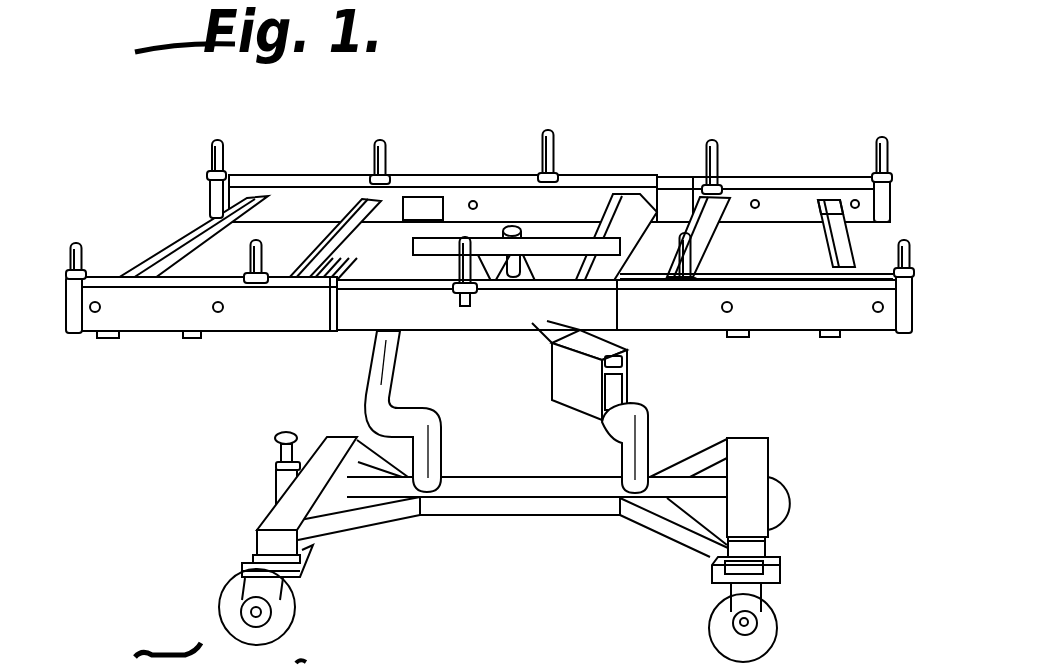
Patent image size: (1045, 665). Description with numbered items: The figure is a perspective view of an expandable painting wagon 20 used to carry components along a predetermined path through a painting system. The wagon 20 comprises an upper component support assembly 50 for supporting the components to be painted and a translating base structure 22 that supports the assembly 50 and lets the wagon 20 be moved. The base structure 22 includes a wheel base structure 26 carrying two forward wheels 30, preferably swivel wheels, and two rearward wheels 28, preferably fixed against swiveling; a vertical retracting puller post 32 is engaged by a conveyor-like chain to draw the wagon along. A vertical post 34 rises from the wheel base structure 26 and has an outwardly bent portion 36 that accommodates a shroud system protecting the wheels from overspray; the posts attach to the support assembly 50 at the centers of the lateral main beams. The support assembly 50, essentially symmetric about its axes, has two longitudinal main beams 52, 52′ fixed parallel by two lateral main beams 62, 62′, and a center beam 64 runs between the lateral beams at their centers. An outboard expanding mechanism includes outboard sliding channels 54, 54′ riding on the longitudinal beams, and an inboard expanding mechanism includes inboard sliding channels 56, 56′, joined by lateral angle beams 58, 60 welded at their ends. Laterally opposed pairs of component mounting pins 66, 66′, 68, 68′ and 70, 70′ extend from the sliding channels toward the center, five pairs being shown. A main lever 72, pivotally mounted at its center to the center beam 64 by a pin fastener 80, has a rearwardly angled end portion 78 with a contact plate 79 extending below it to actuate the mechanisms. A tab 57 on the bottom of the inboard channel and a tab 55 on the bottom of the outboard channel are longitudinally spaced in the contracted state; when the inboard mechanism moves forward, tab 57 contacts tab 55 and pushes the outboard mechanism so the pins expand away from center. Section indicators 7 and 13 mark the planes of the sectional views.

The expandable painting wagon 20 is at (758, 78).
The translating base structure 22 is at (664, 423).
The wheel base structure 26 is at (778, 455).
The rearward wheels 28 is at (778, 628).
The forward wheels 30 is at (298, 609).
The vertical retracting puller post 32 is at (278, 440).
The vertical post 34 is at (365, 380).
The outwardly bent portion 36 is at (366, 418).
The component support assembly 50 is at (167, 344).
The longitudinal main beam 52 is at (468, 322).
The longitudinal main beam 52′ is at (516, 186).
The outboard sliding channel 54 is at (800, 331).
The outboard sliding channel 54′ is at (775, 183).
The tab 55 is at (838, 340).
The inboard sliding channel 56 is at (778, 280).
The inboard sliding channel 56′ is at (842, 250).
The tab 57 is at (752, 334).
The lateral angle beam 58 is at (830, 200).
The lateral angle beam 60 is at (710, 198).
The lateral main beam 62 is at (622, 198).
The lateral main beam 62′ is at (410, 186).
The center beam 64 is at (448, 232).
The component mounting pin 66 is at (907, 255).
The component mounting pin 66′ is at (886, 142).
The component mounting pin 68 is at (702, 250).
The component mounting pin 68′ is at (707, 143).
The mounting pin 70 is at (460, 302).
The mounting pin 70′ is at (548, 128).
The main lever 72 is at (537, 348).
The rearwardly angled end portion 78 is at (624, 362).
The contact plate 79 is at (552, 400).
The pin fastener 80 is at (528, 230).
The section line 7- 7 is at (572, 270).
The section line 13- 13 is at (843, 265).